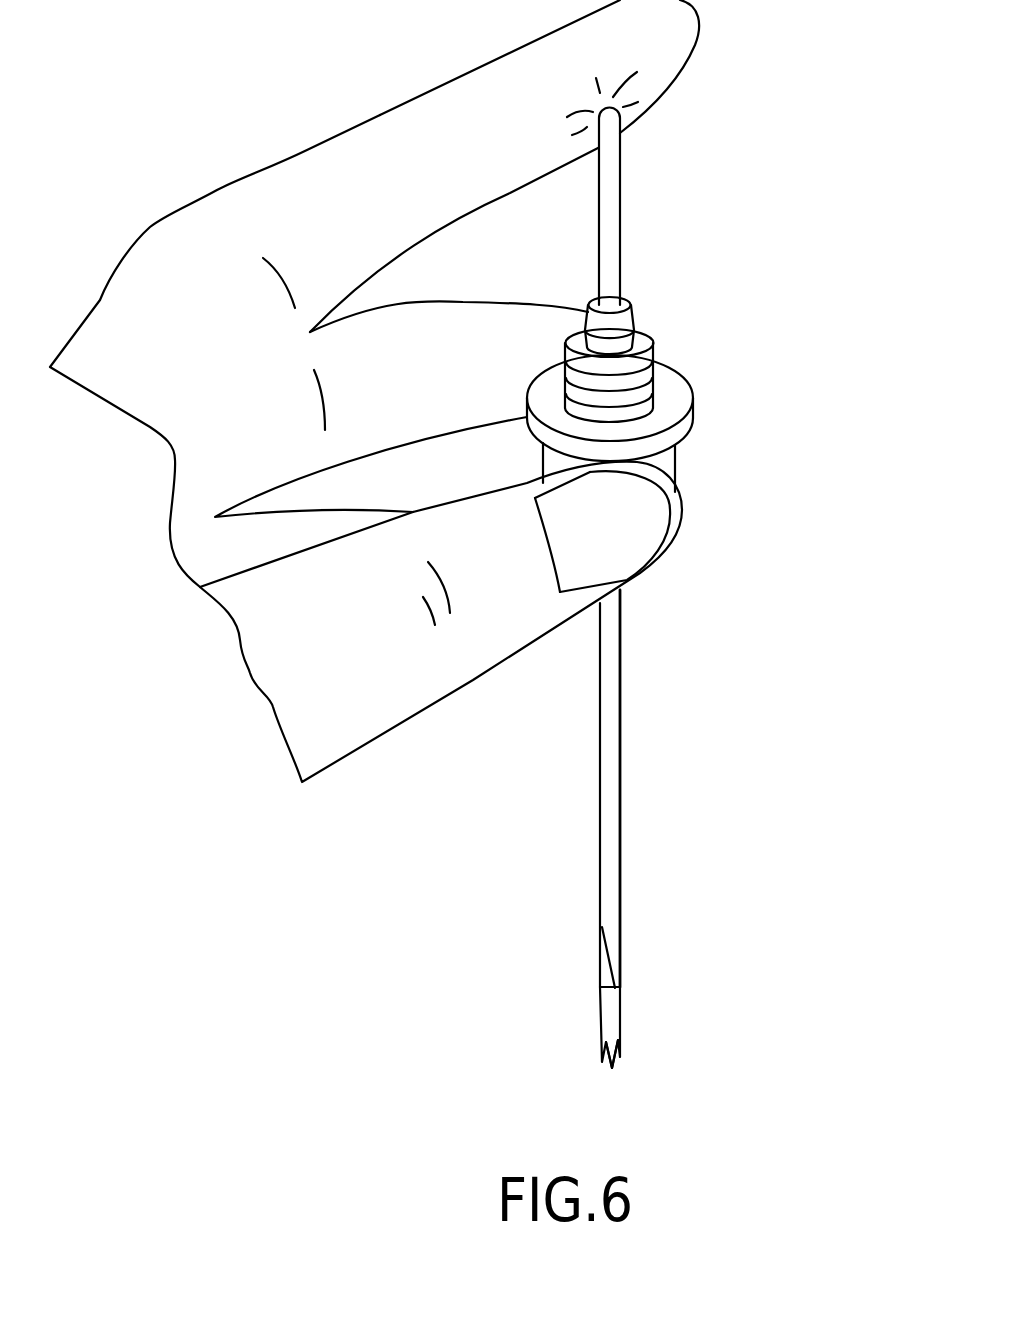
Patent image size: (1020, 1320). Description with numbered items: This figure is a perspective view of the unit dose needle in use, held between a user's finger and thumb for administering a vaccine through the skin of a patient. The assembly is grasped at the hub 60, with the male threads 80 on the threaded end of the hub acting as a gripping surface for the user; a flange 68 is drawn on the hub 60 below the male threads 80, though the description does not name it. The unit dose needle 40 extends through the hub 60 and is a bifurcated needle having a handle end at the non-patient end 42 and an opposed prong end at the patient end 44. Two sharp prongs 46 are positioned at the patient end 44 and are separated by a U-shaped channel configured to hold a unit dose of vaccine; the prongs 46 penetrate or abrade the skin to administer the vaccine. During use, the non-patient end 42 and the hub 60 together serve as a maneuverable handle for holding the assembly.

The unit dose needle 40 is at (606, 716).
The non-patient end 42 is at (608, 120).
The patient end 44 is at (665, 1028).
The prongs 46 is at (612, 1068).
The hub 60 is at (705, 455).
The disc flange 68 is at (683, 432).
The male threads 80 is at (645, 366).